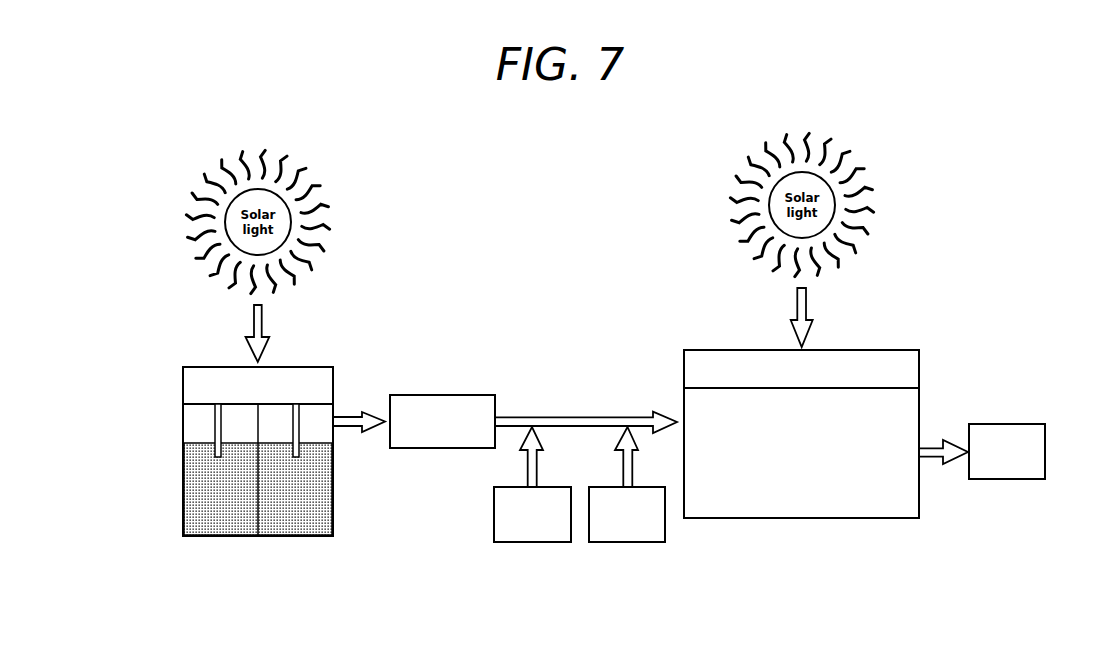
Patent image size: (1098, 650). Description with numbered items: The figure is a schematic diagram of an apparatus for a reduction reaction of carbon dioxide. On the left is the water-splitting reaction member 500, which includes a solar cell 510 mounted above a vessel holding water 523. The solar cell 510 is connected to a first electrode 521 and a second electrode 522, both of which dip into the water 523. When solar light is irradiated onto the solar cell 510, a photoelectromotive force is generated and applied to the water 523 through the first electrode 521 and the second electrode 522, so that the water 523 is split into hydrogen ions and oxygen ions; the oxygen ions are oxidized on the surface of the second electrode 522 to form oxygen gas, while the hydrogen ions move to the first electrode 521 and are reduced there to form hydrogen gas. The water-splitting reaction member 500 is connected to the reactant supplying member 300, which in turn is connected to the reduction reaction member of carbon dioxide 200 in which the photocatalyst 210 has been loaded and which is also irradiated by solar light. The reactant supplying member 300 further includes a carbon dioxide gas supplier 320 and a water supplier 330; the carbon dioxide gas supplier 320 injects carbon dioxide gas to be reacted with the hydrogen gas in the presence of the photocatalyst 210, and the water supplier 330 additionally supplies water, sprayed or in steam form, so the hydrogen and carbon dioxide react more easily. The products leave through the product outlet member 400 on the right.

The reduction reaction member of carbon dioxide 200 is at (893, 482).
The photocatalyst 210 is at (895, 367).
The reactant supplying member 300 is at (457, 393).
The carbon dioxide gas supplier 320 is at (532, 543).
The water supplier 330 is at (627, 543).
The product outlet member 400 is at (1003, 424).
The water-splitting reaction member 500 is at (166, 500).
The solar cell 510 is at (307, 374).
The first electrode 521 is at (302, 450).
The second electrode 522 is at (217, 452).
The water 523 is at (310, 508).